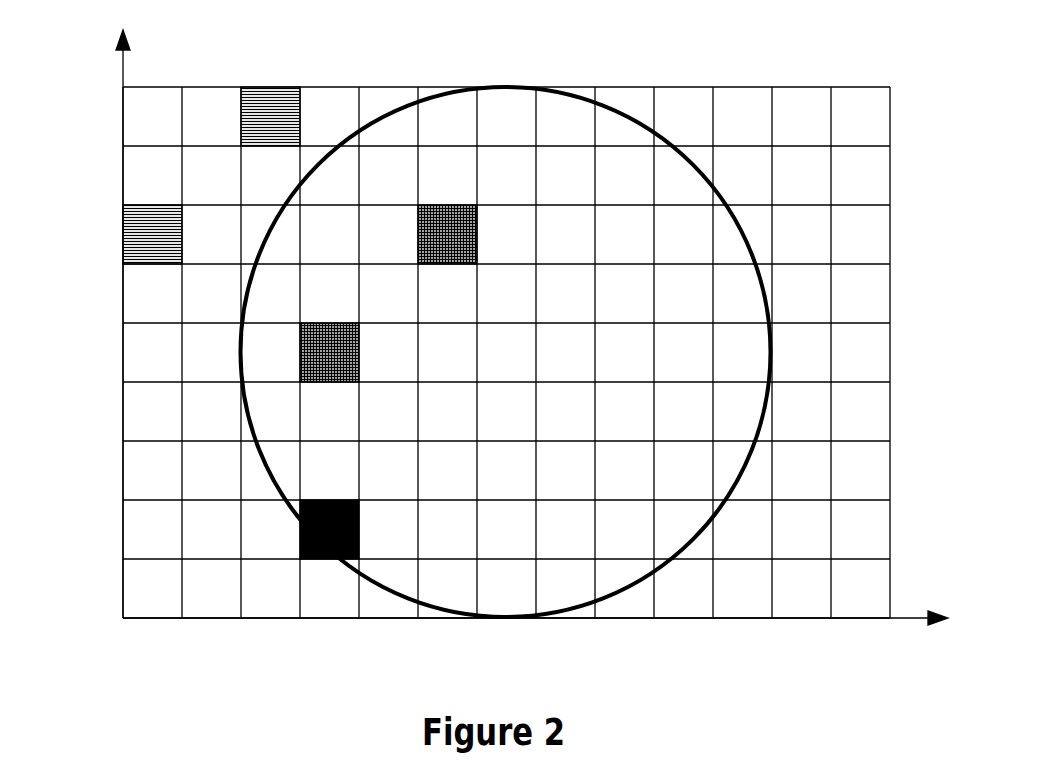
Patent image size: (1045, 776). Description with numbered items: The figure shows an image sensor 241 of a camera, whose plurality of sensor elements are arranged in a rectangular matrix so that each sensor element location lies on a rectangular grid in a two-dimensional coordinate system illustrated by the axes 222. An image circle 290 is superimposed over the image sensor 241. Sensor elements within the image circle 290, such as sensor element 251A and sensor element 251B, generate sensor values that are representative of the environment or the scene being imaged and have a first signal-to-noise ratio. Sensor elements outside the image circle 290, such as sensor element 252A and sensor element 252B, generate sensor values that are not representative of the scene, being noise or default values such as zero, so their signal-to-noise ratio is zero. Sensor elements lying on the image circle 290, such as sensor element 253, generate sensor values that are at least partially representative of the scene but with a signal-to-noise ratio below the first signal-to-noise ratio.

The axes 222 is at (818, 618).
The image sensor 241 is at (730, 87).
The image circle 290 is at (623, 113).
The sensor element 251A is at (477, 226).
The sensor element 251B is at (359, 345).
The sensor element 252A is at (240, 113).
The sensor element 252B is at (121, 237).
The sensor element 253 is at (298, 530).